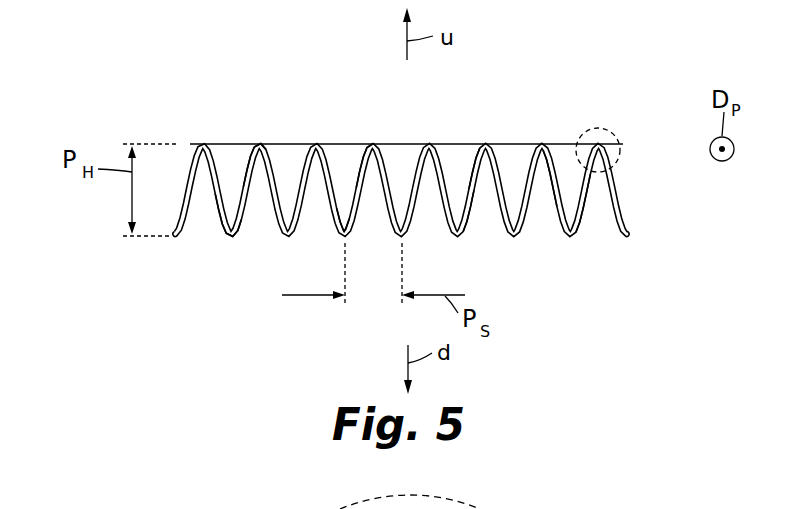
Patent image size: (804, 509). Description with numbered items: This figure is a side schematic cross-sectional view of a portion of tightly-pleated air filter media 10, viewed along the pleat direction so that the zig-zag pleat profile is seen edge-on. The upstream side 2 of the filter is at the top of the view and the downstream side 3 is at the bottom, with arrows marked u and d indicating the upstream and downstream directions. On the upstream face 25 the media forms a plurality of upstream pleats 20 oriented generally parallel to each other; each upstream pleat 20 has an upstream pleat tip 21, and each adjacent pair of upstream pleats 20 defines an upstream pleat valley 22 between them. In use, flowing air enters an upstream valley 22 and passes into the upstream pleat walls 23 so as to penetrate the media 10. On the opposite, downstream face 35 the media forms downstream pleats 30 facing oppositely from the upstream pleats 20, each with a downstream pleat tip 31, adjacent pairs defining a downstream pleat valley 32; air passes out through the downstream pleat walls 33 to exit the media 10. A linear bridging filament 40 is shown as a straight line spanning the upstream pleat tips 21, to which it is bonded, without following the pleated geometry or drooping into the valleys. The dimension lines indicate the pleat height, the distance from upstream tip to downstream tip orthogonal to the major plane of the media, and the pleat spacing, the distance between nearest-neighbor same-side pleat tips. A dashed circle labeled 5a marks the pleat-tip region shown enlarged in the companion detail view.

The pleated filter media 10 is at (126, 49).
The upstream side 2 is at (572, 58).
The downstream side 3 is at (571, 312).
The upstream pleats 20 is at (247, 151).
The upstream pleat tip 21 is at (258, 147).
The upstream pleat valley 22 is at (342, 155).
The upstream pleat walls 23 is at (356, 172).
The upstream face 25 is at (472, 171).
The linear bridging filaments 40 is at (516, 145).
The downstream pleats 30 is at (222, 227).
The downstream pleat tip 31 is at (231, 238).
The downstream pleat valley 32 is at (546, 222).
The downstream pleat walls 33 is at (474, 222).
The downstream face 35 is at (589, 222).
The detail region 5a is at (614, 133).